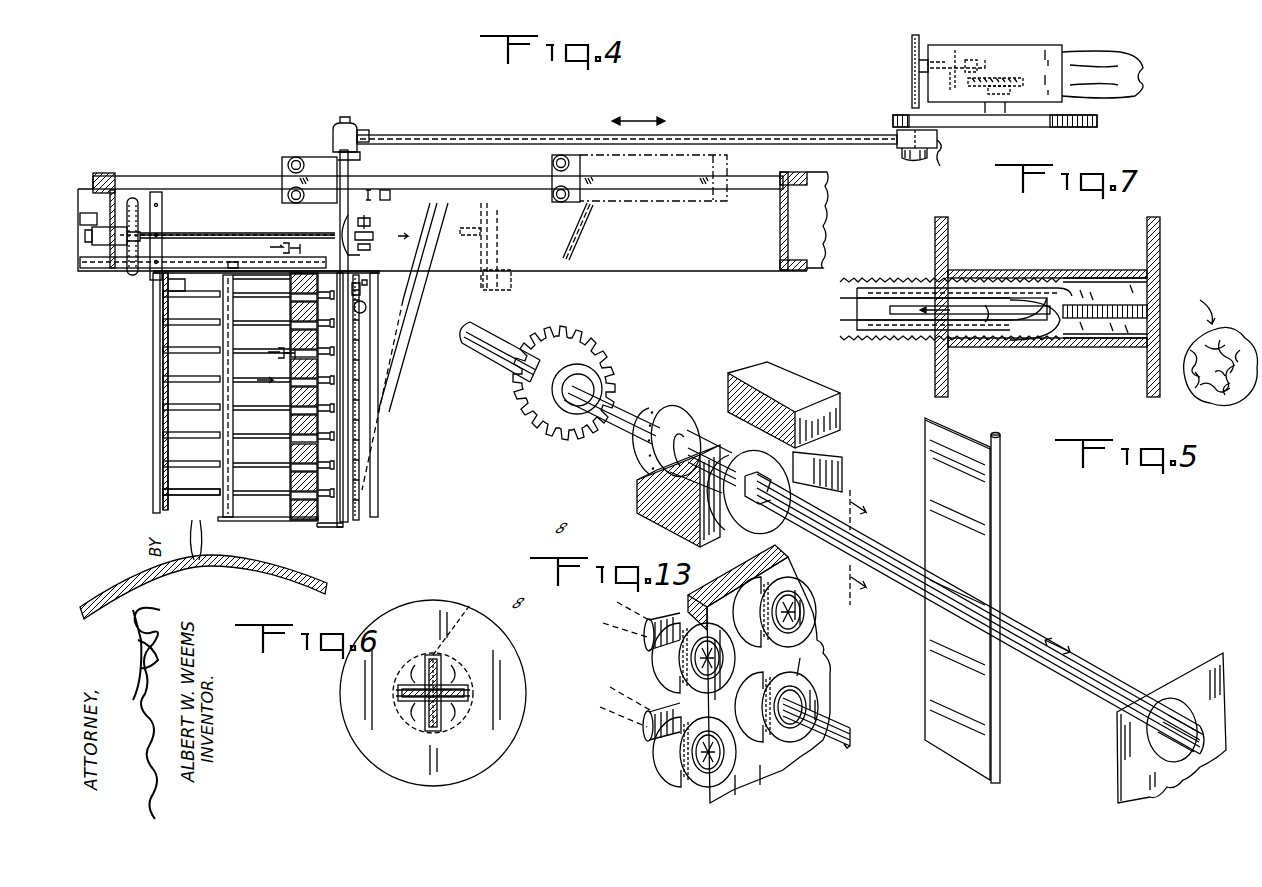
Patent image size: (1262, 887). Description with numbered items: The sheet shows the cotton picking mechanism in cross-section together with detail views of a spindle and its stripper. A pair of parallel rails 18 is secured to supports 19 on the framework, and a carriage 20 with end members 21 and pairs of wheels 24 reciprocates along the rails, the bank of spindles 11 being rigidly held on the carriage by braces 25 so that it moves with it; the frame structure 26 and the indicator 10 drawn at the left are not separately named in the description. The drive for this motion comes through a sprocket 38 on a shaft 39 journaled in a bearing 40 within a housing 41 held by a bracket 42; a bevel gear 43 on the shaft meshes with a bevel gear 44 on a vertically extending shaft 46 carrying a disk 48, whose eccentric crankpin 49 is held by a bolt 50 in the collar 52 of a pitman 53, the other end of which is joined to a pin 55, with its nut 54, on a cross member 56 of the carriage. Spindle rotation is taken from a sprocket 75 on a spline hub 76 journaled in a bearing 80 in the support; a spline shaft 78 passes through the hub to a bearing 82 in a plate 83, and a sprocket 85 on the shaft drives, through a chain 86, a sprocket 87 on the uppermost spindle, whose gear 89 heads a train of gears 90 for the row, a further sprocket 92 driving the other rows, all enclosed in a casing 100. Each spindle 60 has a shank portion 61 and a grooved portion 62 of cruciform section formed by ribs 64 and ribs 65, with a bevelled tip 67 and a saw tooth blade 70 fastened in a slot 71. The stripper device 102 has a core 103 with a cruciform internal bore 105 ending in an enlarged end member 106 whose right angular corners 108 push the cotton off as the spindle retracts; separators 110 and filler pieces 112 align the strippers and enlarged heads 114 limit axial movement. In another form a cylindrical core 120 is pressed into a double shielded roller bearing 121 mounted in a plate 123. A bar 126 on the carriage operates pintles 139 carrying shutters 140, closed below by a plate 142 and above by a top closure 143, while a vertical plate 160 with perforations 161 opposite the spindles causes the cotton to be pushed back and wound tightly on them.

In FIG. 4, the indicator 10 is at (88, 221).
In FIG. 4, the bank of spindles 11 is at (180, 425).
In FIG. 4, the rails 18 is at (210, 178).
In FIG. 4, the supports 19 is at (120, 178).
In FIG. 4, the carriage 20 is at (325, 157).
In FIG. 4, the end members 21 is at (302, 157).
In FIG. 4, the wheels 24 is at (292, 160).
In FIG. 4, the braces 25 is at (412, 328).
In FIG. 4, the cabinet frame 26 is at (158, 338).
In FIG. 7, the sprocket 38 is at (912, 52).
In FIG. 7, the shaft 39 is at (960, 55).
In FIG. 7, the bearing 40 is at (935, 60).
In FIG. 7, the housing 41 is at (1010, 52).
In FIG. 7, the bracket 42 is at (1105, 55).
In FIG. 7, the bevel gear 43 is at (975, 62).
In FIG. 7, the bevel gear 44 is at (1000, 78).
In FIG. 7, the vertically extending shaft 46 is at (1008, 92).
In FIG. 7, the disk 48 is at (1005, 127).
In FIG. 7, the crankpin 49 is at (910, 122).
In FIG. 7, the bolt 50 is at (913, 160).
In FIG. 7, the collar 52 is at (940, 162).
In FIG. 4, the pitman 53 is at (758, 134).
In FIG. 4, the post nut 54 is at (366, 134).
In FIG. 4, the pin 55 is at (349, 124).
In FIG. 4, the cross member 56 is at (350, 168).
In FIG. 4, the spindle 60 is at (262, 442).
In FIG. 5, the spindle 60 is at (915, 347).
In FIG. 6, the spindle 60 is at (919, 610).
In FIG. 13, the spindle 60 is at (849, 715).
In FIG. 6, the shank portion 61 is at (618, 410).
In FIG. 5, the grooved portion 62 is at (1040, 294).
In FIG. 6, the grooved portion 62 is at (1078, 672).
In FIG. 5, the radiating ribs 64 is at (975, 303).
In FIG. 6, the radiating ribs 64 is at (442, 722).
In FIG. 5, the radiating ribs 65 is at (985, 320).
In FIG. 6, the radiating ribs 65 is at (450, 690).
In FIG. 4, the bevelled end 67 is at (163, 492).
In FIG. 5, the bevelled end 67 is at (1052, 335).
In FIG. 6, the bevelled end 67 is at (1180, 775).
In FIG. 4, the saw tooth blade 70 is at (168, 285).
In FIG. 5, the saw tooth blade 70 is at (900, 282).
In FIG. 6, the saw tooth blade 70 is at (1112, 680).
In FIG. 6, the slot 71 is at (441, 660).
In FIG. 4, the sprocket 75 is at (133, 200).
In FIG. 4, the spline hub 76 is at (150, 225).
In FIG. 4, the spline shaft 78 is at (210, 232).
In FIG. 4, the bearing 80 is at (108, 247).
In FIG. 4, the bearing 82 is at (362, 222).
In FIG. 4, the plate 83 is at (360, 255).
In FIG. 4, the sprocket 85 is at (372, 236).
In FIG. 4, the chain 86 is at (370, 247).
In FIG. 4, the sprocket 87 is at (368, 306).
In FIG. 4, the gear 89 is at (360, 397).
In FIG. 6, the gear 89 is at (585, 335).
In FIG. 4, the train of gears 90 is at (356, 382).
In FIG. 4, the sprocket 92 is at (370, 288).
In FIG. 4, the casing 100 is at (380, 420).
In FIG. 5, the stripper device 102 is at (1112, 267).
In FIG. 6, the stripper device 102 is at (711, 472).
In FIG. 4, the core 103 is at (290, 398).
In FIG. 5, the core 103 is at (1085, 280).
In FIG. 6, the core 103 is at (688, 455).
In FIG. 5, the internal bore 105 is at (1140, 290).
In FIG. 5, the end member 106 is at (1160, 240).
In FIG. 6, the end member 106 is at (766, 452).
In FIG. 6, the right angular corners 108 is at (750, 532).
In FIG. 13, the right angular corners 108 is at (712, 648).
In FIG. 4, the separators 110 is at (296, 448).
In FIG. 6, the separators 110 is at (826, 405).
In FIG. 6, the filler pieces 112 is at (818, 452).
In FIG. 5, the enlarged heads 114 is at (948, 245).
In FIG. 6, the enlarged heads 114 is at (676, 412).
In FIG. 13, the cylindrical core 120 is at (788, 612).
In FIG. 13, the double shielded roller bearing 121 is at (775, 670).
In FIG. 13, the plate 123 is at (820, 665).
In FIG. 4, the bar 126 is at (260, 258).
In FIG. 13, the bar 126 is at (640, 671).
In FIG. 6, the pintle 139 is at (1000, 440).
In FIG. 4, the shutter 140 is at (233, 318).
In FIG. 6, the shutter 140 is at (990, 530).
In FIG. 4, the plate 142 is at (280, 522).
In FIG. 4, the top closure 143 is at (244, 276).
In FIG. 4, the plate 160 is at (160, 313).
In FIG. 6, the plate 160 is at (1200, 662).
In FIG. 4, the perforations 161 is at (163, 378).
In FIG. 6, the perforations 161 is at (1150, 748).